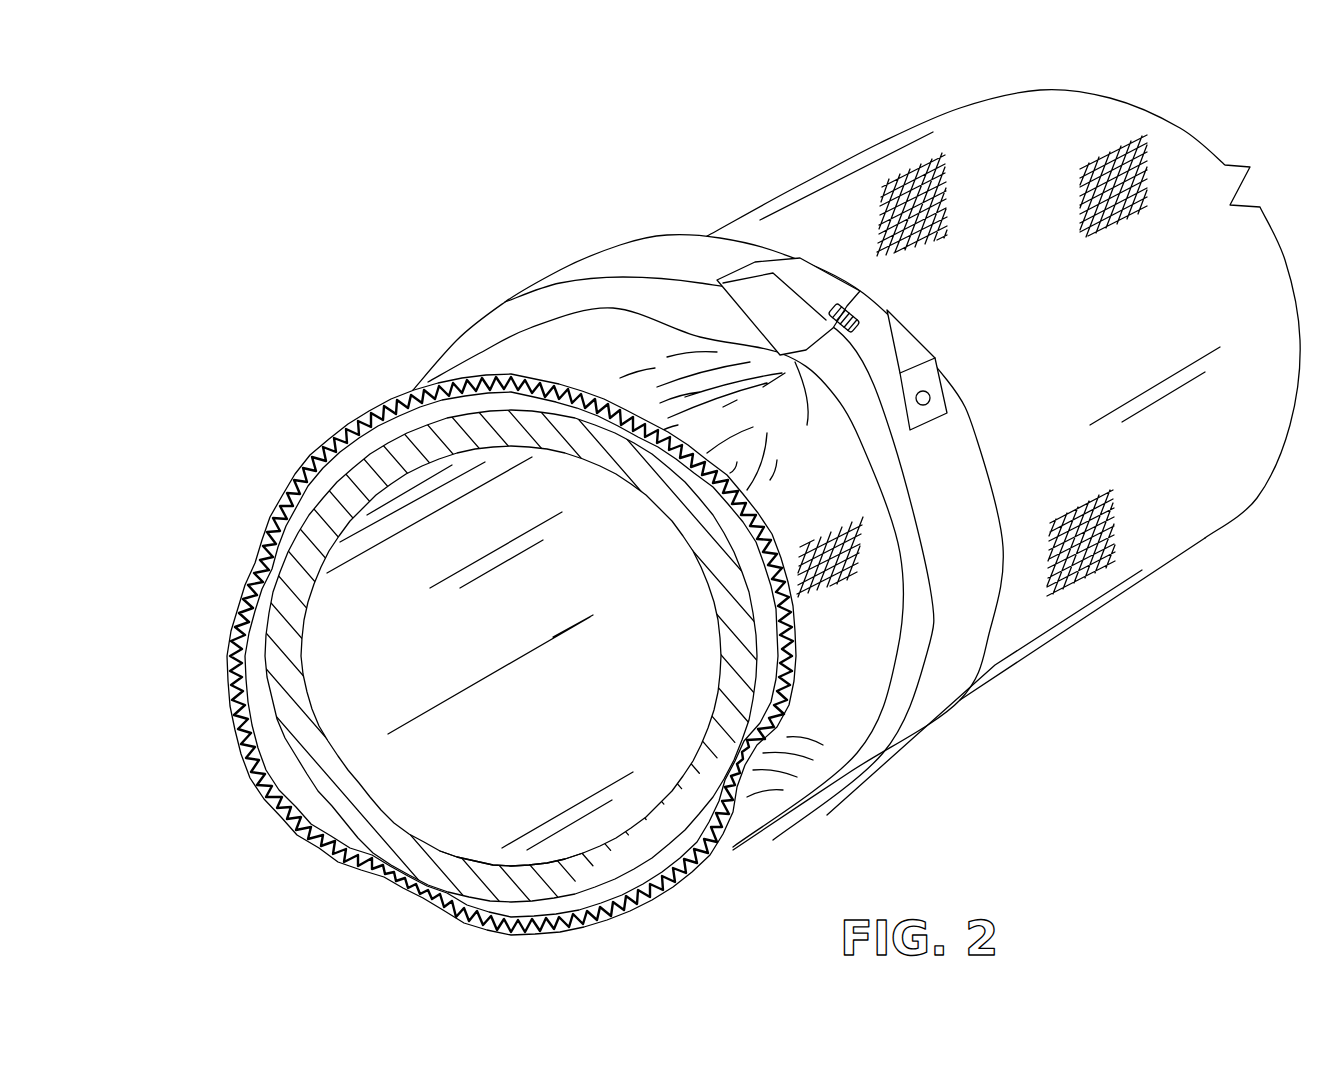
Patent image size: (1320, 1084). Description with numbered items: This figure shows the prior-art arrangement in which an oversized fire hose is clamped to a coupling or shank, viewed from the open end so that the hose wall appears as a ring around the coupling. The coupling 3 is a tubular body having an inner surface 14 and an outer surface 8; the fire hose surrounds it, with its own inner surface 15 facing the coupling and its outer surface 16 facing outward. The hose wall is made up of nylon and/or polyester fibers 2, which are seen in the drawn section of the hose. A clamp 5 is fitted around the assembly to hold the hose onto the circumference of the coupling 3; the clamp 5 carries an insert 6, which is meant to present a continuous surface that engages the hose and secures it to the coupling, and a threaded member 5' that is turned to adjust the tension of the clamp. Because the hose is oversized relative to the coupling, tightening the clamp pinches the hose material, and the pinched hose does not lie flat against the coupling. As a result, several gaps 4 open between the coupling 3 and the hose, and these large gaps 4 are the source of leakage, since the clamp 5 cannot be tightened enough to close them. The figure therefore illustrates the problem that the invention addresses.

The nylon and/or polyester fibers 2 is at (700, 497).
The coupling 3 is at (310, 540).
The gaps 4 is at (405, 422).
The clamp 5 is at (856, 469).
The threaded member 5' is at (707, 549).
The insert 6 is at (725, 421).
The outer surface 8 is at (347, 443).
The inner surface 14 is at (433, 848).
The inner surface 15 is at (243, 675).
The outer surface 16 is at (511, 621).